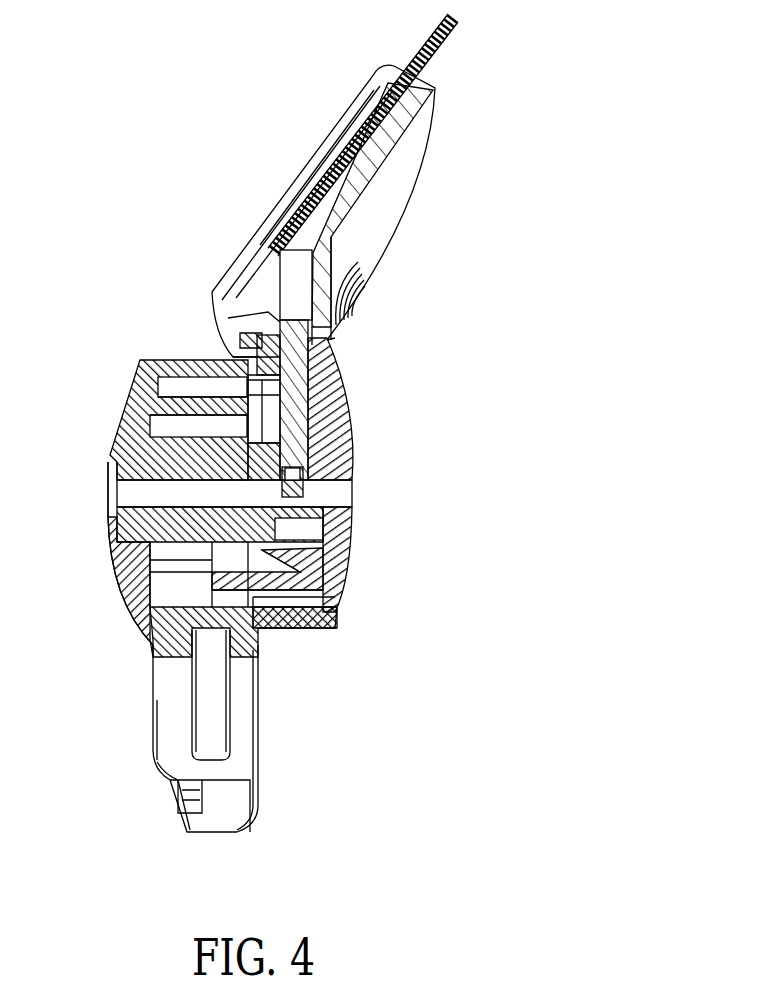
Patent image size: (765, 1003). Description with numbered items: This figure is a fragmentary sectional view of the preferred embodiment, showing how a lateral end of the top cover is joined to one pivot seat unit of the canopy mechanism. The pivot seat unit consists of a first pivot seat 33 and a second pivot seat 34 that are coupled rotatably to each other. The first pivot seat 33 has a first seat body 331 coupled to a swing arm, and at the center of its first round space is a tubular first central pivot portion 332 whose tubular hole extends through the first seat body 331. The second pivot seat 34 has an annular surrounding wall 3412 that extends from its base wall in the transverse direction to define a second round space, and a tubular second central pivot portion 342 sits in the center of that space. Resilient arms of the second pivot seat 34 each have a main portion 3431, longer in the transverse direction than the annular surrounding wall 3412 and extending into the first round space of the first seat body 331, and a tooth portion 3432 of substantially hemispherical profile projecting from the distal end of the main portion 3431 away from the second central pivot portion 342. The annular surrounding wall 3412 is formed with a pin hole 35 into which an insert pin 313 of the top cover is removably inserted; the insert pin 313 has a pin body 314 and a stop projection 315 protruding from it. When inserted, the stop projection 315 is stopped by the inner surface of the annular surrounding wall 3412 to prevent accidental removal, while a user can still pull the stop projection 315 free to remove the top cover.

The first pivot seat 33 is at (118, 407).
The second pivot seat 34 is at (286, 185).
The pin hole 35 is at (255, 345).
The insert pin 313 is at (290, 363).
The pin body 314 is at (331, 352).
The stop projection 315 is at (282, 393).
The first seat body 331 is at (153, 638).
The first central pivot portion 332 is at (150, 488).
The second central pivot portion 342 is at (292, 440).
The annular surrounding wall 3412 is at (298, 625).
The main portion 3431 is at (340, 618).
The tooth portion 3432 is at (257, 657).